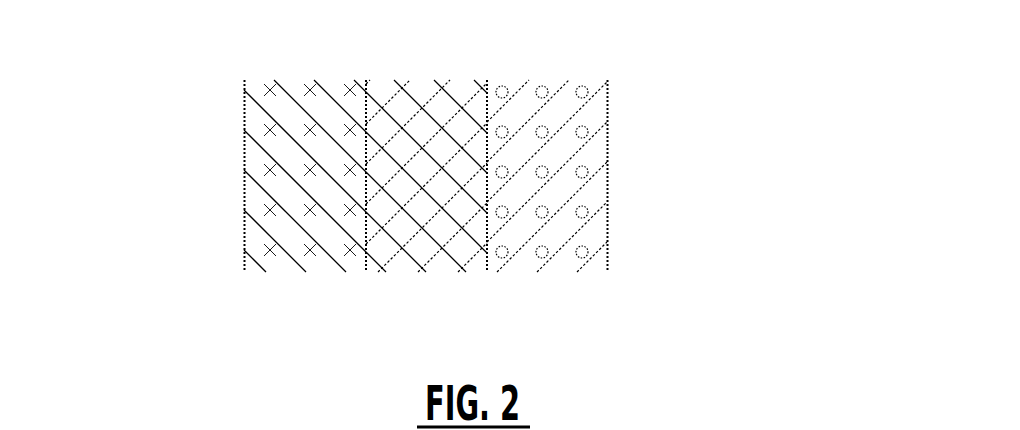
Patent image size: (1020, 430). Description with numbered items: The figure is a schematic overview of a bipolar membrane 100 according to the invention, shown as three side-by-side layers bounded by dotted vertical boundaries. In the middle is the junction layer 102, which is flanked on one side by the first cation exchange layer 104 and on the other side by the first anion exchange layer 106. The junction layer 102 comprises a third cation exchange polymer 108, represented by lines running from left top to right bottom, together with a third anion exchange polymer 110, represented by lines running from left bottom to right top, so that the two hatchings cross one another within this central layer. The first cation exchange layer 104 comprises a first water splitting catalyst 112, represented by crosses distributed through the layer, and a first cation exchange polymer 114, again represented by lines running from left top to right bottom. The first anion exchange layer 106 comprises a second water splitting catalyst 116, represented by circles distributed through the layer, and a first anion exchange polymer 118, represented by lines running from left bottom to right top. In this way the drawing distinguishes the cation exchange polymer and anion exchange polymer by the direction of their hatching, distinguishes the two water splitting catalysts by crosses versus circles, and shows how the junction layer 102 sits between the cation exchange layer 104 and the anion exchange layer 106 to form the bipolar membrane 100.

The bipolar membrane 100 is at (190, 81).
The junction layer 102 is at (426, 286).
The first cation exchange layer 104 is at (300, 287).
The first anion exchange layer 106 is at (530, 285).
The third cation exchange polymer 108 is at (474, 240).
The third anion exchange polymer 110 is at (455, 121).
The first water splitting catalyst 112 is at (276, 251).
The first cation exchange polymer 114 is at (260, 143).
The second water splitting catalyst 116 is at (584, 211).
The first anion exchange polymer 118 is at (587, 103).